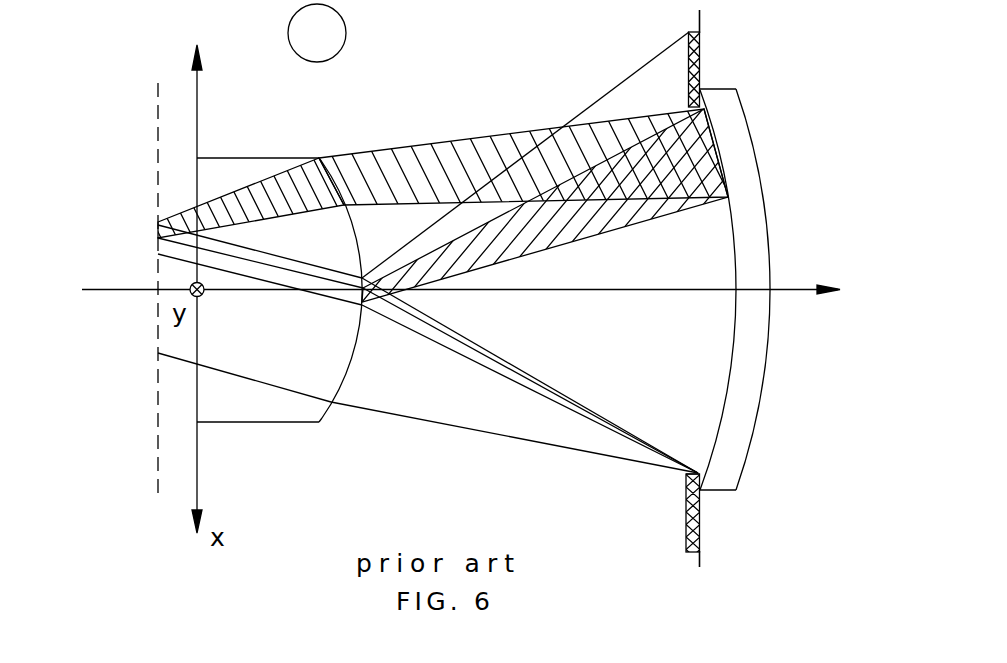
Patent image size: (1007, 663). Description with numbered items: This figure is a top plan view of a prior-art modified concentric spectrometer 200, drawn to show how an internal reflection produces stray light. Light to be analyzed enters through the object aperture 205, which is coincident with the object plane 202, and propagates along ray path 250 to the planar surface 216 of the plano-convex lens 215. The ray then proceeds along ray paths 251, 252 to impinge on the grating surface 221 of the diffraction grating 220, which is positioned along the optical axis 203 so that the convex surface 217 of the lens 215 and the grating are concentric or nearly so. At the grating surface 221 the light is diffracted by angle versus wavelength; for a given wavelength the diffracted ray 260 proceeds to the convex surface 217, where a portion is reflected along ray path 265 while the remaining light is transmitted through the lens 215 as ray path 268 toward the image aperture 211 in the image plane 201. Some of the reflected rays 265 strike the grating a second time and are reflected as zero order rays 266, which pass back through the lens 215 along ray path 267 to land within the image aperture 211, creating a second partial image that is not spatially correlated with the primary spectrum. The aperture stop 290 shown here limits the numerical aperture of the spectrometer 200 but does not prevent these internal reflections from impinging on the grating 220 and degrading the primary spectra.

The modified concentric spectrometer 200 is at (317, 33).
The image plane 201 is at (158, 105).
The object plane 202 is at (158, 465).
The optical axis 203 is at (778, 291).
The object aperture 205 is at (158, 353).
The image aperture 211 is at (157, 240).
The plano-convex lens 215 is at (252, 405).
The planar surface 216 is at (195, 405).
The convex surface 217 is at (331, 418).
The diffraction grating 220 is at (740, 417).
The grating surface 221 is at (687, 478).
The ray path 250 is at (185, 363).
The ray path 251 is at (273, 388).
The ray path 252 is at (463, 430).
The diffracted ray 260 is at (475, 362).
The reflected ray path 265 is at (574, 238).
The zero order rays 266 is at (366, 158).
The ray path 267 is at (263, 216).
The ray path 268 is at (177, 259).
The aperture stop 290 is at (687, 520).